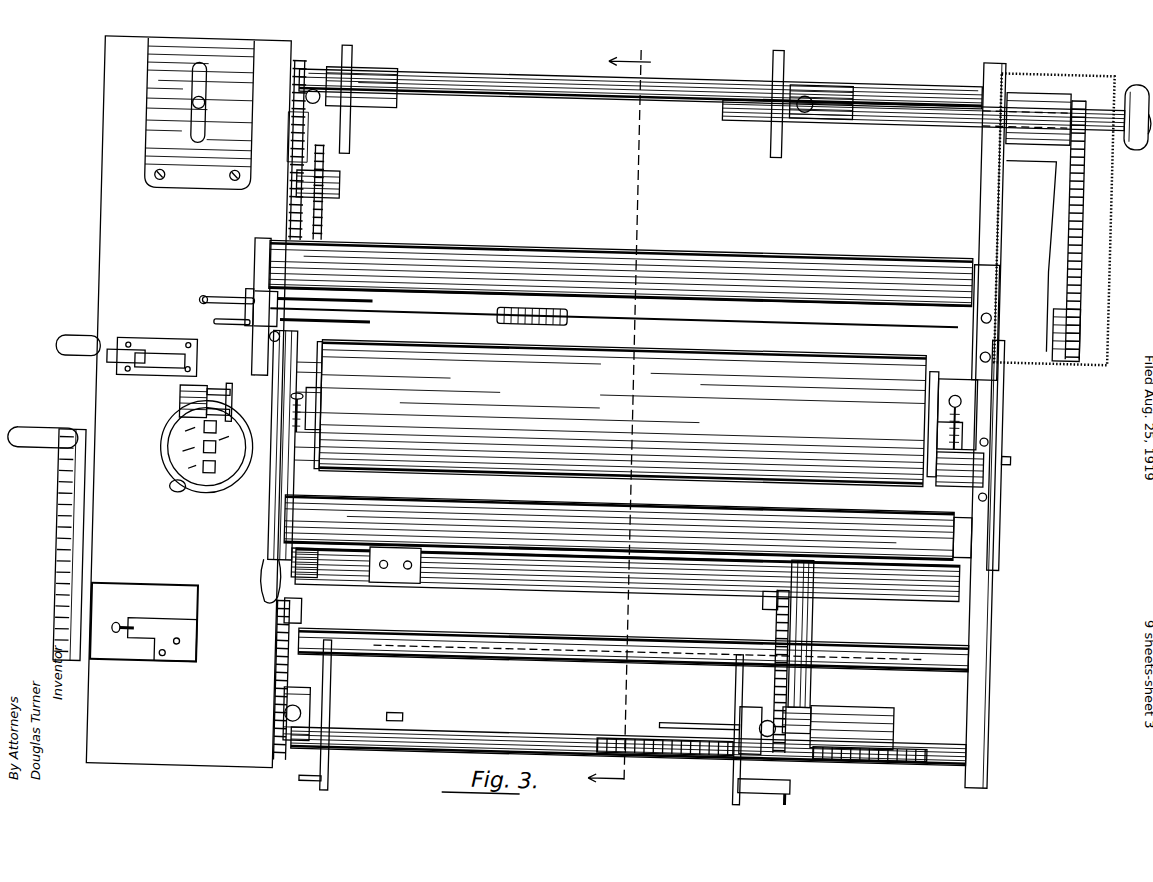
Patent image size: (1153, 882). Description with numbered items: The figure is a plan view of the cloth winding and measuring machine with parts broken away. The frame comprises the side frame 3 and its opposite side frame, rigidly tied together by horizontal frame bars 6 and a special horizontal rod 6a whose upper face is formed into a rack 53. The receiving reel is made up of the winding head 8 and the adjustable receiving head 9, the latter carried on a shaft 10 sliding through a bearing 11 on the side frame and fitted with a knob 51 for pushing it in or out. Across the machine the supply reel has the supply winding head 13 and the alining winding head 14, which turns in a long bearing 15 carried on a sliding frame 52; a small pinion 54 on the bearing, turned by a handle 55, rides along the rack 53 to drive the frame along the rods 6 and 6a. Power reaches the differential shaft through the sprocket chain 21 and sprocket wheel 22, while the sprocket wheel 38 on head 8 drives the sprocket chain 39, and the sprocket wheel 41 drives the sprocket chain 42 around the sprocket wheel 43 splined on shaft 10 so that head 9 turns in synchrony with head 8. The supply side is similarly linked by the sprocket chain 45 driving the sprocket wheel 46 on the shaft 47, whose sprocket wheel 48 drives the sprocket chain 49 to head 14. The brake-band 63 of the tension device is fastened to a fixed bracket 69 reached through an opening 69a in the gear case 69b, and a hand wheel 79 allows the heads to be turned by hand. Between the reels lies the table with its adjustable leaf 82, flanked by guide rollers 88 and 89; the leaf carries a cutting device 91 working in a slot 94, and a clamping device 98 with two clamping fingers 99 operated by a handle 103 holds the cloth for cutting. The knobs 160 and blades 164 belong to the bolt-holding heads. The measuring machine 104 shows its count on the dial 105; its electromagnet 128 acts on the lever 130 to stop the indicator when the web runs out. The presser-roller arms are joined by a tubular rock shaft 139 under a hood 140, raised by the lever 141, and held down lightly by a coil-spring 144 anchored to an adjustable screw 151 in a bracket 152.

The side frame 3 is at (1005, 426).
The horizontal frame bars 6 is at (633, 405).
The special horizontal rod 6a is at (887, 722).
The winding head 8 is at (351, 99).
The adjustable receiving head 9 is at (720, 420).
The shaft 10 is at (923, 128).
The bearing 11 is at (1003, 132).
The supply winding head 13 is at (335, 715).
The winding head 14 is at (714, 728).
The long bearing 15 is at (852, 712).
The sprocket chain 21 is at (346, 192).
The sprocket wheel 22 is at (351, 175).
The sprocket wheel 38 is at (311, 133).
The sprocket chain 39 is at (307, 137).
The sprocket wheel 41 is at (1067, 352).
The sprocket chain 42 is at (1070, 219).
The sprocket wheel 43 is at (1118, 97).
The sprocket chain 45 is at (301, 699).
The sprocket wheel 46 is at (302, 675).
The shaft 47 is at (633, 641).
The sprocket wheel 48 is at (744, 608).
The sprocket chain 49 is at (807, 672).
The knob 51 is at (1133, 147).
The sliding frame 52 is at (833, 647).
The rack 53 is at (664, 761).
The pinion 54 is at (731, 746).
The handle 55 is at (805, 791).
The brake-band 63 is at (148, 590).
The fixed bracket 69 is at (161, 659).
The opening 69a is at (174, 623).
The gear case 69b is at (189, 417).
The hand wheel 79 is at (44, 544).
The adjustable leaf 82 is at (621, 255).
The guide roller 88 is at (624, 584).
The guide roller 89 is at (626, 296).
The cutting device 91 is at (533, 263).
The slot 94 is at (615, 265).
The clamping device 98 is at (229, 281).
The clamping fingers 99 is at (316, 268).
The handle 103 is at (215, 285).
The measuring machine 104 is at (198, 503).
The dial 105 is at (181, 443).
The electromagnet 128 is at (196, 366).
The lever 130 is at (231, 383).
The tubular rock shaft 139 is at (1014, 472).
The hood 140 is at (610, 412).
The lever 141 is at (628, 518).
The coil-spring 144 is at (704, 429).
The adjustable screw 151 is at (704, 415).
The bracket 152 is at (333, 409).
The knob 160 is at (578, 387).
The blade 164 is at (563, 704).